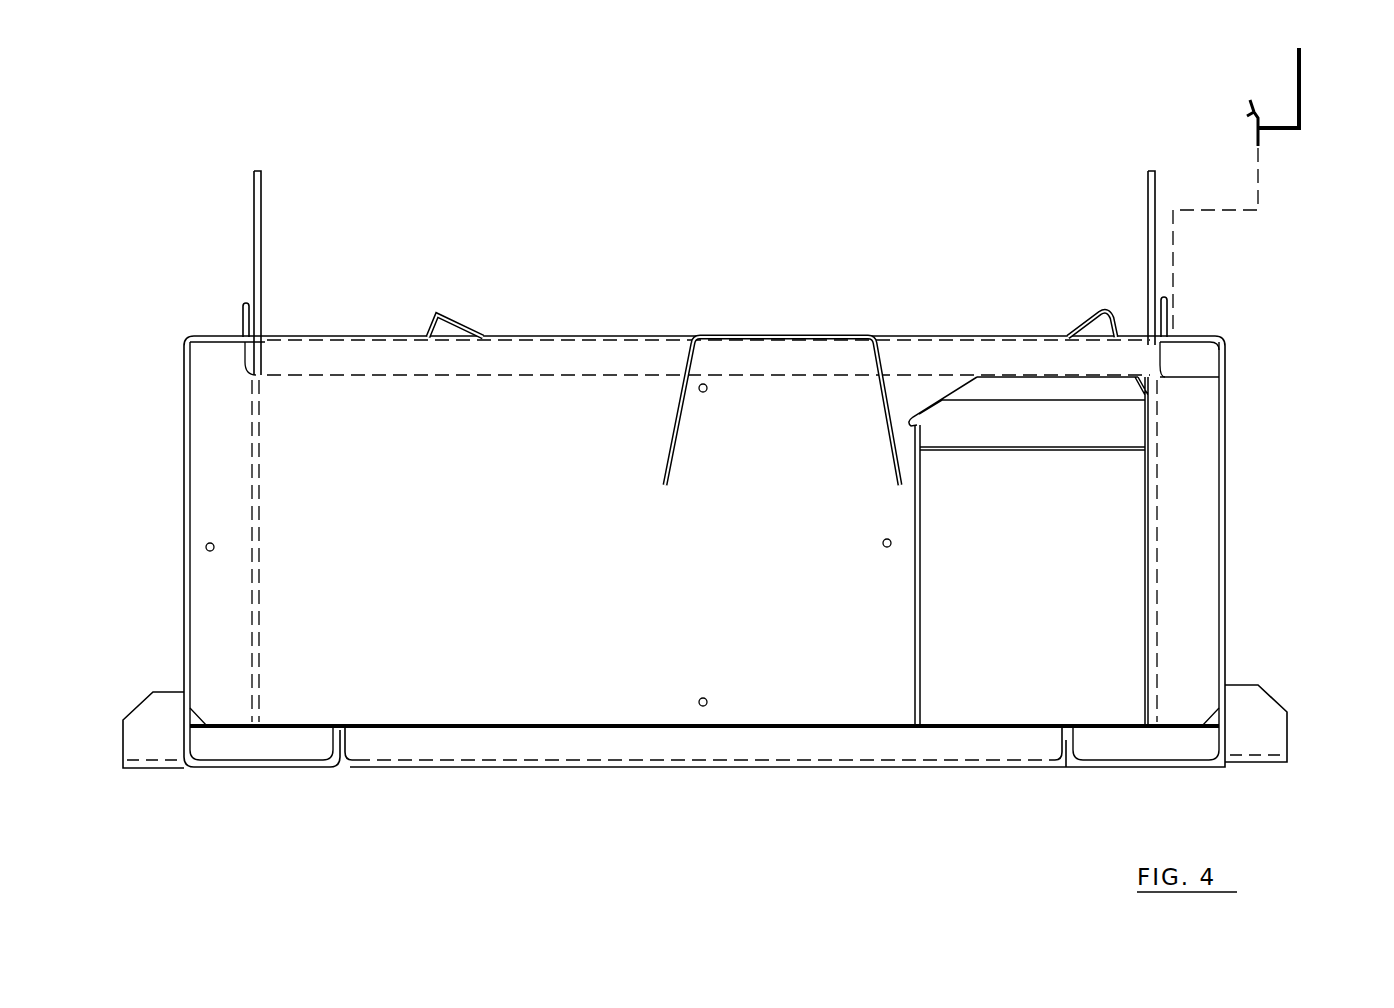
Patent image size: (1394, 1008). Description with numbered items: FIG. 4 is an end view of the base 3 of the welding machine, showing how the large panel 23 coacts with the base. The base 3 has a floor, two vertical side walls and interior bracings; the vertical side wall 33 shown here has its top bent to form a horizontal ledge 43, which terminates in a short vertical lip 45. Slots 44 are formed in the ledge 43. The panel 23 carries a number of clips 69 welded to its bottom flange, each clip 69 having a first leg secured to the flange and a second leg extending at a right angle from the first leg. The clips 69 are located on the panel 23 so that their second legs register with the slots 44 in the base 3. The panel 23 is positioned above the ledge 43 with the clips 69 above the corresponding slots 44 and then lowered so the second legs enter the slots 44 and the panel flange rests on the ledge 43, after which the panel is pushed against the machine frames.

The base 3 is at (1228, 600).
The large panel 23 is at (1312, 90).
The vertical side wall 33 is at (1226, 508).
The horizontal ledge 43 is at (1187, 337).
The slots 44 is at (1182, 330).
The vertical lip 45 is at (1170, 305).
The clip 69 is at (1247, 104).